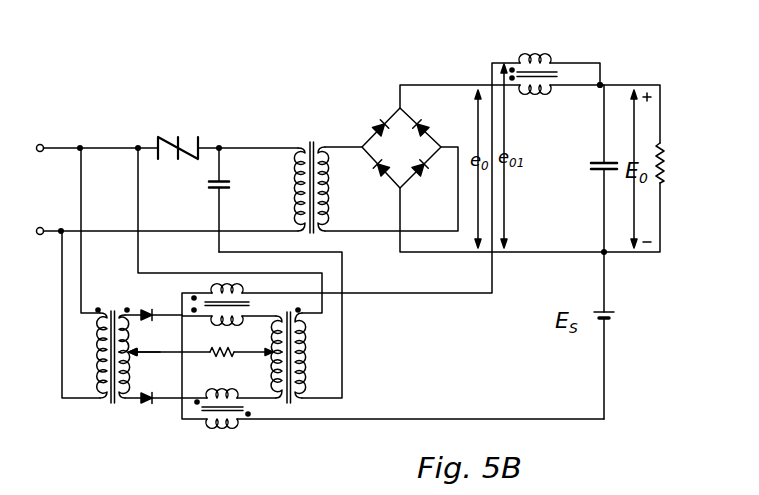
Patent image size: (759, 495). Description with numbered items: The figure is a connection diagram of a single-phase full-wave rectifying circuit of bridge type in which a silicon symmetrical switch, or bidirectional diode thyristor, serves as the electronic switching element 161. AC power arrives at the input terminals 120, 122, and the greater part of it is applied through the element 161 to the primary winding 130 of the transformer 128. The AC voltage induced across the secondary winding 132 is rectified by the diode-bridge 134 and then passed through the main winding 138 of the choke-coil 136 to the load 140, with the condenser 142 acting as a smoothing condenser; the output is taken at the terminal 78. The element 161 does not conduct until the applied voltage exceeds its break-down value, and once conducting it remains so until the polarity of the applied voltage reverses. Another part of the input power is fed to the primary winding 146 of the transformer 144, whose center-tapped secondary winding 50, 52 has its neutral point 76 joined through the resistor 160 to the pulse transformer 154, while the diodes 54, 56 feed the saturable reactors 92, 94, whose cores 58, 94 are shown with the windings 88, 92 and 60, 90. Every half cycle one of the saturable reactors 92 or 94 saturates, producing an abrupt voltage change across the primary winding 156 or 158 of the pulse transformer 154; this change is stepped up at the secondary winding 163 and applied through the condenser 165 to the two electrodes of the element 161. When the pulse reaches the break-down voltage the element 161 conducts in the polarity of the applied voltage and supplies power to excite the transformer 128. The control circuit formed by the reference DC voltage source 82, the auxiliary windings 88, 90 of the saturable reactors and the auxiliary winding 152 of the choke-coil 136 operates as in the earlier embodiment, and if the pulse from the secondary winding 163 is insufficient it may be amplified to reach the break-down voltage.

The input terminal 120 is at (39, 143).
The input terminal 122 is at (38, 227).
The electronic switching element 161 is at (182, 136).
The condenser 165 is at (209, 186).
The transformer 128 is at (311, 140).
The primary winding 130 is at (291, 182).
The secondary winding 132 is at (330, 184).
The diode-bridge 134 is at (414, 151).
The auxiliary winding 152 is at (537, 58).
The main winding 138 is at (541, 91).
The choke-coil 136 is at (565, 72).
The output terminal 78 is at (603, 84).
The condenser 142 is at (590, 165).
The load 140 is at (667, 160).
The reference DC voltage source 82 is at (615, 315).
The diode 54 is at (145, 311).
The diode 56 is at (148, 404).
The primary winding 146 is at (94, 355).
The transformer 144 is at (113, 406).
The secondary winding 50 is at (133, 336).
The secondary winding 52 is at (130, 366).
The neutral point 76 is at (133, 355).
The resistor 160 is at (212, 351).
The transformer 58 is at (218, 318).
The auxiliary winding 88 is at (233, 291).
The saturable reactor 92 is at (249, 305).
The primary winding 156 is at (275, 337).
The primary winding 158 is at (273, 382).
The pulse transformer 154 is at (290, 406).
The secondary winding 163 is at (307, 356).
The winding 60 is at (217, 394).
The auxiliary winding 90 is at (221, 423).
The saturable reactor 94 is at (249, 409).